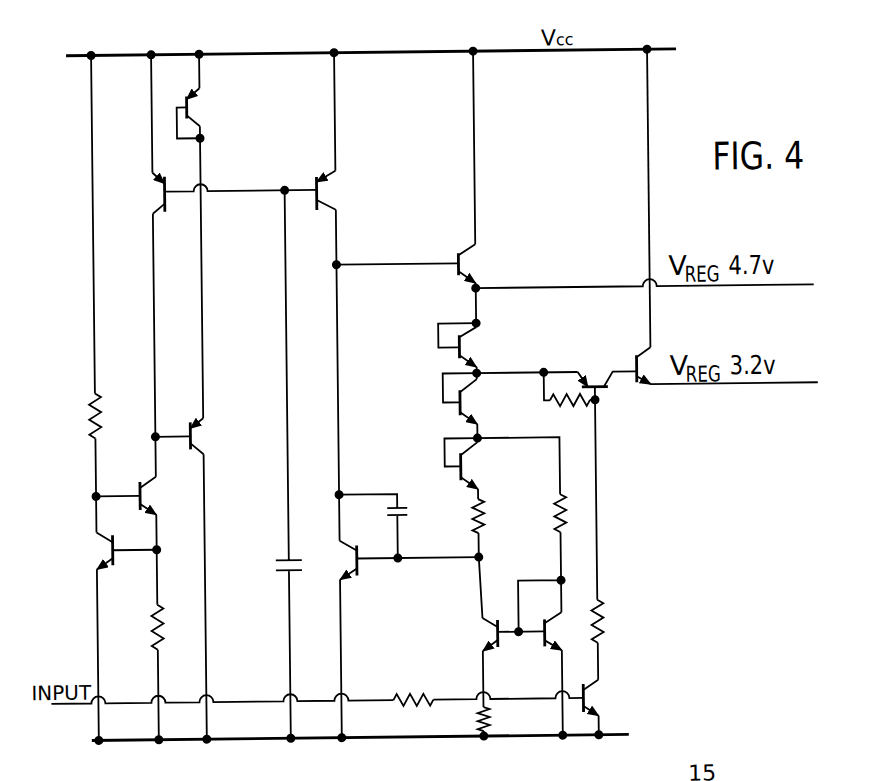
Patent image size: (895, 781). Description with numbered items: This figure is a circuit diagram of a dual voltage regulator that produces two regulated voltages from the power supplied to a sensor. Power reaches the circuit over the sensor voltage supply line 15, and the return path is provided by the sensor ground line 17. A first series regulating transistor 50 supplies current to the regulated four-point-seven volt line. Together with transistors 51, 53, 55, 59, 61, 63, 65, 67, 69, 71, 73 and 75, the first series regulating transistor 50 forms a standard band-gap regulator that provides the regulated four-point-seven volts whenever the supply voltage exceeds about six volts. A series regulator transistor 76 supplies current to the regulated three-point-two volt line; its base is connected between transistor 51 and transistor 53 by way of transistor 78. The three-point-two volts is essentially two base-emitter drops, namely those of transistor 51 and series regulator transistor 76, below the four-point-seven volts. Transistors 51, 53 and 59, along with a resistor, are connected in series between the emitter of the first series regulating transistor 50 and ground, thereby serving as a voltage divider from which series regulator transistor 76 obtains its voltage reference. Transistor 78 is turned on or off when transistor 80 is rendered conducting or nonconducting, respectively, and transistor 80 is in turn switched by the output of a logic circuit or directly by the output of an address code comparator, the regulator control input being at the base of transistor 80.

The sensor voltage supply line 15 is at (382, 52).
The sensor ground line 17 is at (180, 739).
The first series regulating transistor 50 is at (464, 258).
The transistor 51 is at (463, 344).
The transistor 53 is at (463, 402).
The transistor 55 is at (463, 467).
The transistor 59 is at (546, 631).
The transistor 61 is at (493, 634).
The transistor 63 is at (359, 563).
The transistor 65 is at (109, 539).
The transistor 67 is at (143, 490).
The transistor 69 is at (195, 437).
The transistor 71 is at (165, 194).
The transistor 73 is at (192, 104).
The transistor 75 is at (322, 194).
The series regulator transistor 76 is at (634, 387).
The transistor 78 is at (587, 381).
The transistor 80 is at (583, 699).